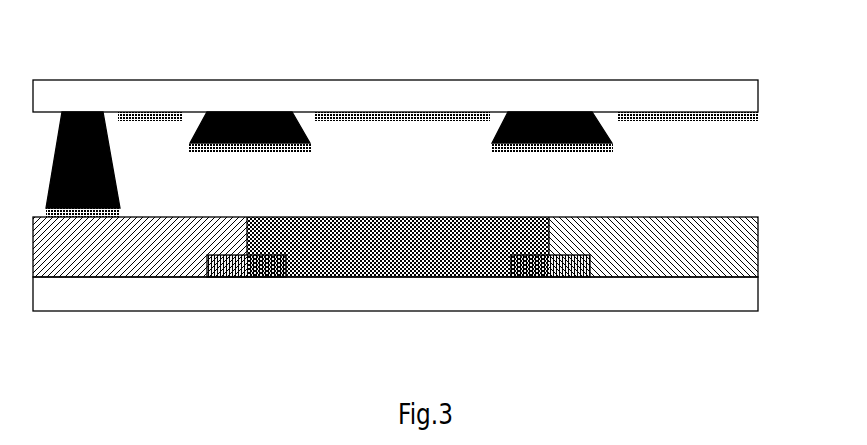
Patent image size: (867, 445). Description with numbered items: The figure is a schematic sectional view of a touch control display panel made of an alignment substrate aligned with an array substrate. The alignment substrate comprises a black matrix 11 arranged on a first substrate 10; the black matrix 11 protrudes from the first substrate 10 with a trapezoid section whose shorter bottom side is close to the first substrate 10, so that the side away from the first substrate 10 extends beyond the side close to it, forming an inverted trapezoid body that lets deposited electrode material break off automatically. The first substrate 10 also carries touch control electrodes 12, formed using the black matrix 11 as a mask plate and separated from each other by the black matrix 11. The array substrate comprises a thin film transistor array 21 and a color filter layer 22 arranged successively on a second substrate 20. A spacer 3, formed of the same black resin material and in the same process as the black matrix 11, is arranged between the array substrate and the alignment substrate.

The spacer 3 is at (79, 112).
The first substrate 10 is at (760, 93).
The black matrix 11 is at (540, 112).
The touch control electrode 12 is at (758, 117).
The second substrate 20 is at (752, 296).
The thin film transistor array 21 is at (552, 268).
The color filter layer 22 is at (628, 232).